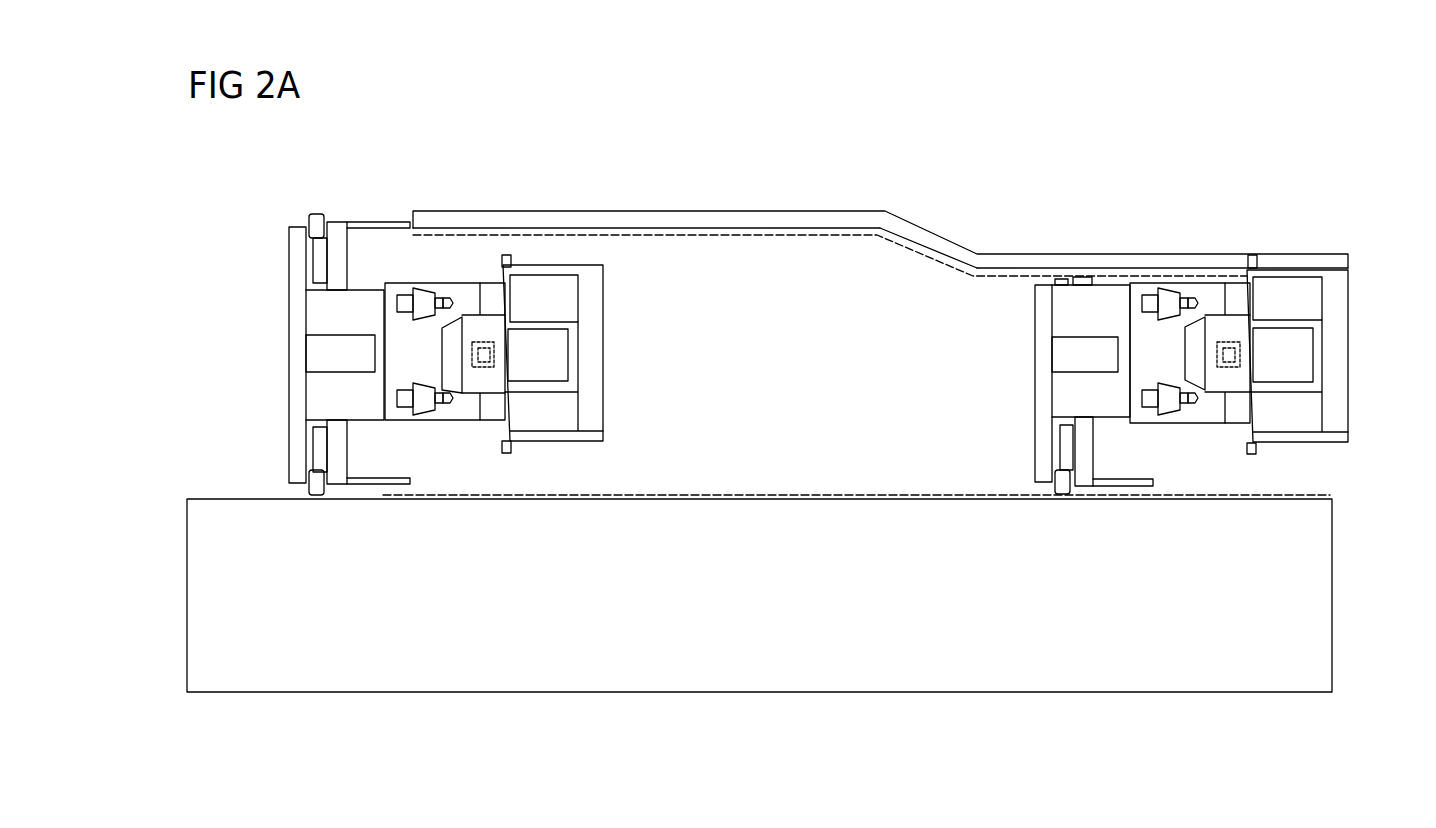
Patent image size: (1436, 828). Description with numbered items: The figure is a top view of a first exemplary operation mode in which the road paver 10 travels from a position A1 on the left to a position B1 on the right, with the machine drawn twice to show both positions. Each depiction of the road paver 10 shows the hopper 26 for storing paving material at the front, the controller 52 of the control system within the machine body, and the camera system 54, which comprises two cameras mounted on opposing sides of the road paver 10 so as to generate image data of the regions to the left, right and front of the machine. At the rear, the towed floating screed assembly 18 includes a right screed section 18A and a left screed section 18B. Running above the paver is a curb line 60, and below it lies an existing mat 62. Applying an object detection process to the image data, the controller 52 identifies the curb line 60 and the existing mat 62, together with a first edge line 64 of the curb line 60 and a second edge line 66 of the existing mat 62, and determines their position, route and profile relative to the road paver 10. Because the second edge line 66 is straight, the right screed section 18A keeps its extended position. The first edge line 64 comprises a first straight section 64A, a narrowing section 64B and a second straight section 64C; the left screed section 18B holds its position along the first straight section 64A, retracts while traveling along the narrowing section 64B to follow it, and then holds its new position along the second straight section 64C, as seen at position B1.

The road paver 10 is at (820, 344).
The screed assembly 18 is at (290, 350).
The right screed section 18A is at (318, 438).
The left screed section 18B is at (320, 258).
The hopper 26 is at (573, 430).
The controller 52 is at (483, 368).
The camera system 54 is at (505, 258).
The curb line 60 is at (573, 210).
The existing mat 62 is at (770, 510).
The first edge line 64 is at (663, 236).
The first straight section 64A is at (770, 236).
The narrowing section 64B is at (900, 250).
The second straight section 64C is at (1003, 273).
The second edge line 66 is at (862, 495).
The position A1 is at (424, 178).
The position B1 is at (1199, 225).